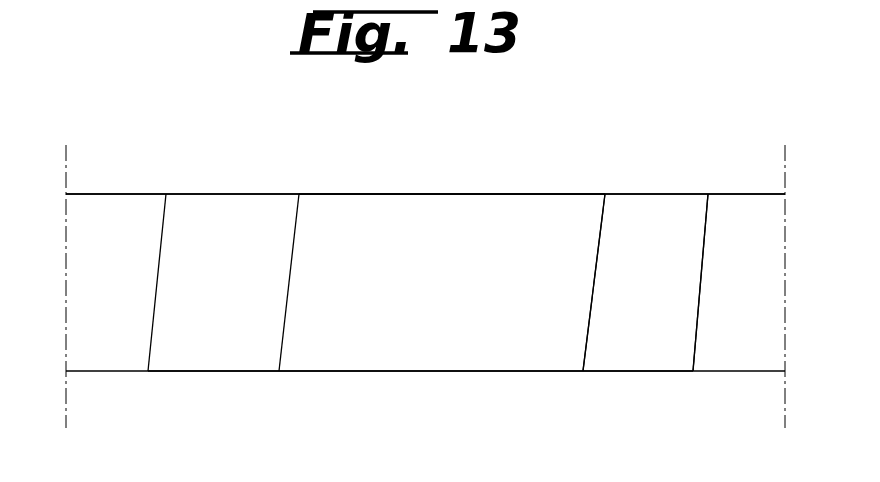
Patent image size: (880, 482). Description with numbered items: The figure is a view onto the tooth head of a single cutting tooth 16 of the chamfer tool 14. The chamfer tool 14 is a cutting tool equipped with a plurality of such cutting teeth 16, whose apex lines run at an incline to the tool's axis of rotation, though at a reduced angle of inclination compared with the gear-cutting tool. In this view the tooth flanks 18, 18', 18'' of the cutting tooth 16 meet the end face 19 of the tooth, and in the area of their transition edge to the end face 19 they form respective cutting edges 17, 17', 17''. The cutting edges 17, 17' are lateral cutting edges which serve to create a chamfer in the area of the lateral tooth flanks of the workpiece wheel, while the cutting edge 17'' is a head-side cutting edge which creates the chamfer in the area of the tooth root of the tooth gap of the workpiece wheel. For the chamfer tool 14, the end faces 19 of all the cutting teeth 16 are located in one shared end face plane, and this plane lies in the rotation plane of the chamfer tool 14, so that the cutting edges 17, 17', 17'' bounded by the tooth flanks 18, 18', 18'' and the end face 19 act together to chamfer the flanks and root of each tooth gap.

The chamfer tool 14 is at (692, 183).
The cutting tooth 16 is at (340, 194).
The cutting edge 17 is at (645, 331).
The cutting edge 17' is at (213, 331).
The head-side cutting edge 17'' is at (516, 331).
The tooth flank 18 is at (645, 331).
The tooth flank 18' is at (231, 331).
The tooth flank 18'' is at (452, 159).
The end face 19 is at (371, 371).